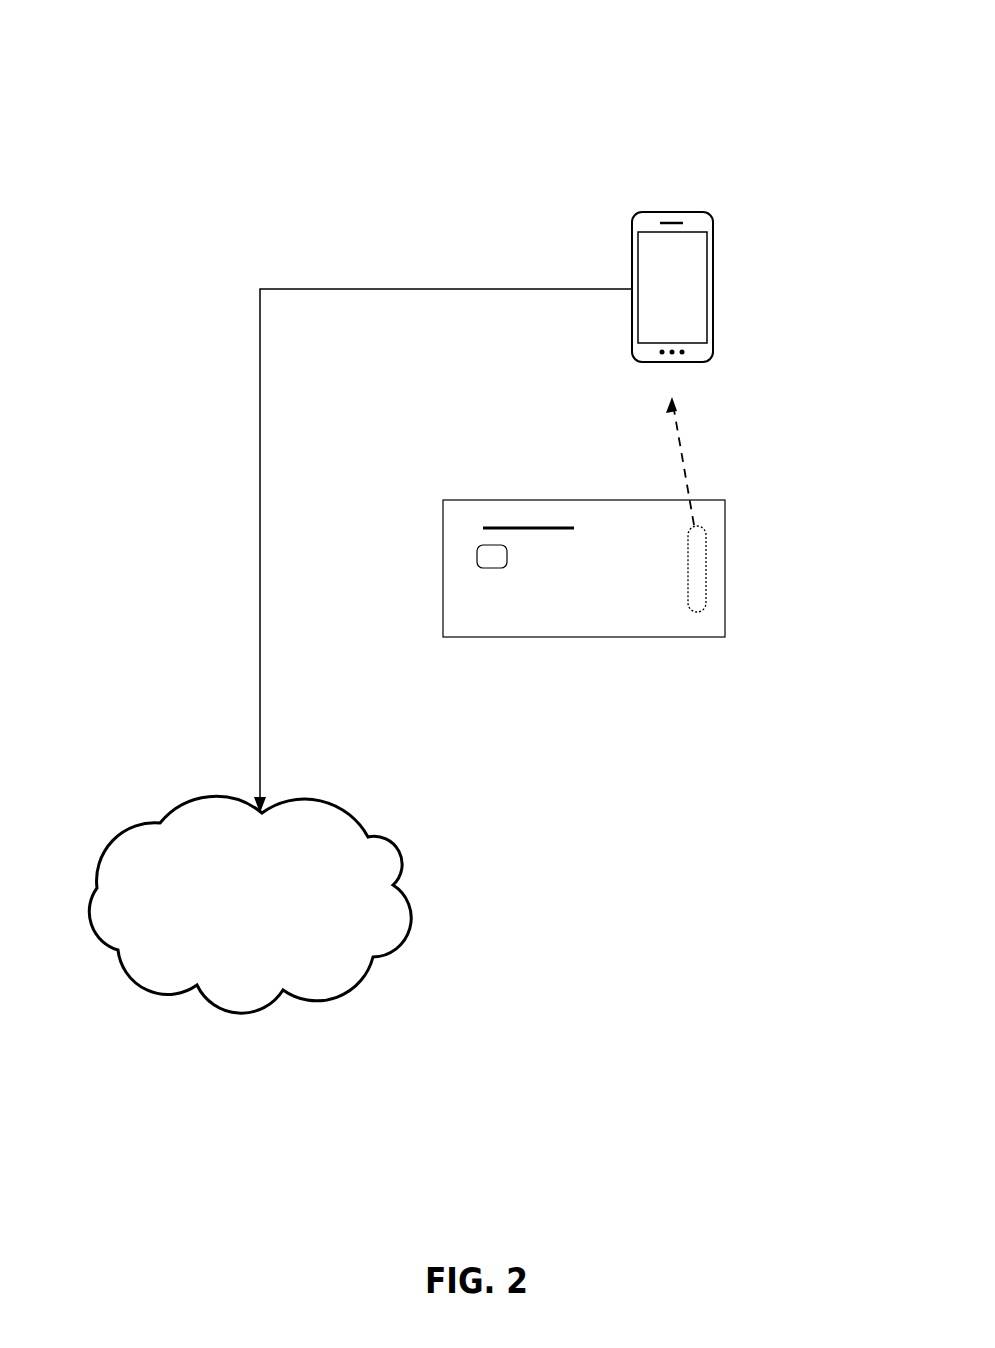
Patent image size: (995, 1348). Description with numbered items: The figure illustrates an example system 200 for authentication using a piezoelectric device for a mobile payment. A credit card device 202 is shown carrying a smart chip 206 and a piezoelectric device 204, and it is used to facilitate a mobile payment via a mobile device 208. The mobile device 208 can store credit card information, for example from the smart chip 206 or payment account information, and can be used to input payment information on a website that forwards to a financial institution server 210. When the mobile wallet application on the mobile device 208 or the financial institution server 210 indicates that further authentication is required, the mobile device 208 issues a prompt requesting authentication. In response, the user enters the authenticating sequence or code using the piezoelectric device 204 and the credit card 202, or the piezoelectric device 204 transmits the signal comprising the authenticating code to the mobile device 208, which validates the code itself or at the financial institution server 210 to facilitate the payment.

The system 200 is at (137, 32).
The credit card device 202 is at (725, 609).
The piezoelectric device 204 is at (706, 547).
The smart chip 206 is at (477, 553).
The mobile device 208 is at (713, 215).
The financial institution server 210 is at (250, 904).